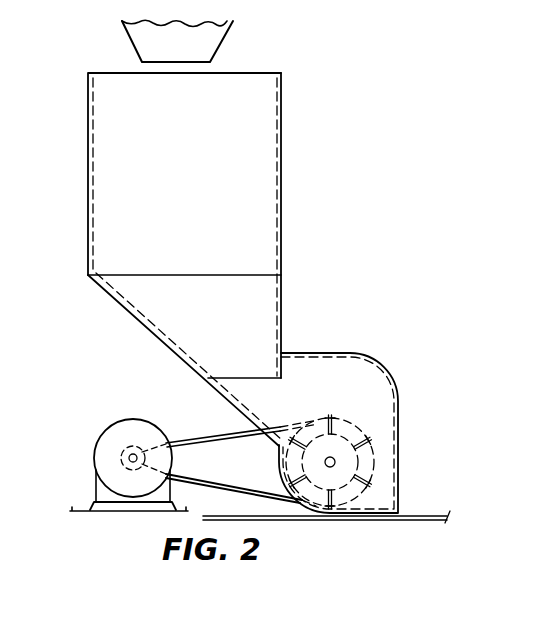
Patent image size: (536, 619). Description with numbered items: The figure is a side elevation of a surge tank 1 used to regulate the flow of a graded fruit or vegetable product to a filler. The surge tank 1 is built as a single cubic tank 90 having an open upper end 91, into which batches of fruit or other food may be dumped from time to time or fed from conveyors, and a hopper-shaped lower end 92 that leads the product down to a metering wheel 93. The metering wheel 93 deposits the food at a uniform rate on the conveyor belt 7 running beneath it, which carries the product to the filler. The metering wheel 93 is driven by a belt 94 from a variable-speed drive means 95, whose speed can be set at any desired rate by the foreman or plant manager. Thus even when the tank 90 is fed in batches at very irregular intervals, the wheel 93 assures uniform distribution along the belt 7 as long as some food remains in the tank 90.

The surge tank 1 is at (300, 178).
The conveyor belt 7 is at (446, 522).
The cubic tank 90 is at (104, 151).
The open upper end 91 is at (226, 74).
The hopper-shaped lower end 92 is at (168, 327).
The metering wheel 93 is at (358, 430).
The belt 94 is at (221, 431).
The variable-speed drive means 95 is at (97, 452).